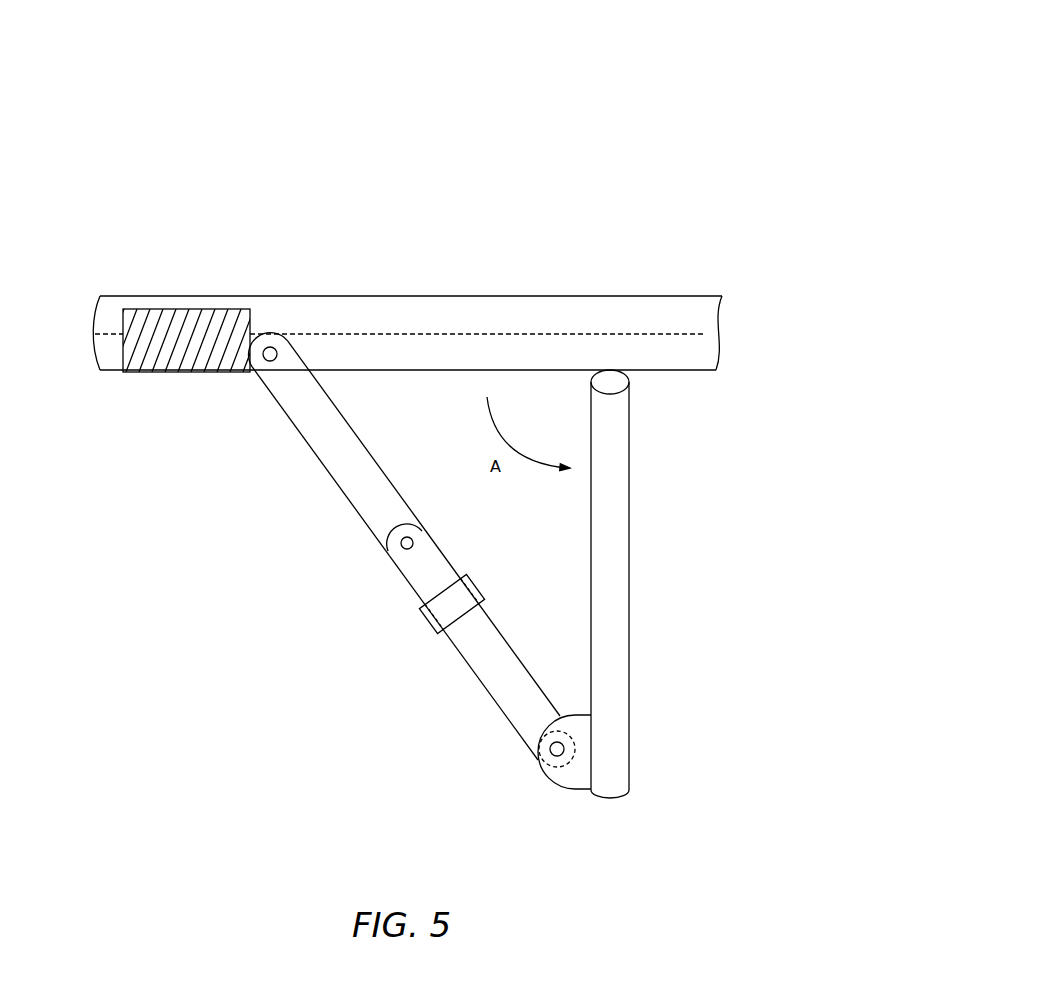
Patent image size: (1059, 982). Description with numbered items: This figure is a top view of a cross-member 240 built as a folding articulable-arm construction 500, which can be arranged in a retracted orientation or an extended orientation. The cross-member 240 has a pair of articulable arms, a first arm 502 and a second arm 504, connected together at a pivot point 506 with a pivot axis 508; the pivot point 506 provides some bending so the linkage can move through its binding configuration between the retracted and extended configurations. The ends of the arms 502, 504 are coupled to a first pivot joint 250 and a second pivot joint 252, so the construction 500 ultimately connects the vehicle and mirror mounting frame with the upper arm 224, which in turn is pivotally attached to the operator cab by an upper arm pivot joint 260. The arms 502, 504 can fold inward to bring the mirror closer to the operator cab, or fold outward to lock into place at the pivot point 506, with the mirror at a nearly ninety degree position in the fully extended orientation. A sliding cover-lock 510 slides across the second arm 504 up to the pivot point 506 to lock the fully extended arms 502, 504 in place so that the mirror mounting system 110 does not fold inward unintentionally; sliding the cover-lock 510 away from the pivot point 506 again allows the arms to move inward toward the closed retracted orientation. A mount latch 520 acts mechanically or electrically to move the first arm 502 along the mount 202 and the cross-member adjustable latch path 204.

The folding articulable-arm construction 500 is at (570, 110).
The mirror mounting system 110 is at (155, 472).
The mount 202 is at (500, 296).
The cross-member adjustable latch path 204 is at (394, 333).
The upper arm 224 is at (608, 612).
The cross-member 240 is at (331, 520).
The first pivot joint 250 is at (272, 350).
The second pivot joint 252 is at (554, 750).
The upper arm pivot joint 260 is at (618, 380).
The first arm 502 is at (300, 393).
The second arm 504 is at (497, 679).
The pivot point 506 is at (395, 545).
The pivot axis 508 is at (405, 547).
The sliding cover-lock 510 is at (432, 627).
The mount latch 520 is at (190, 318).